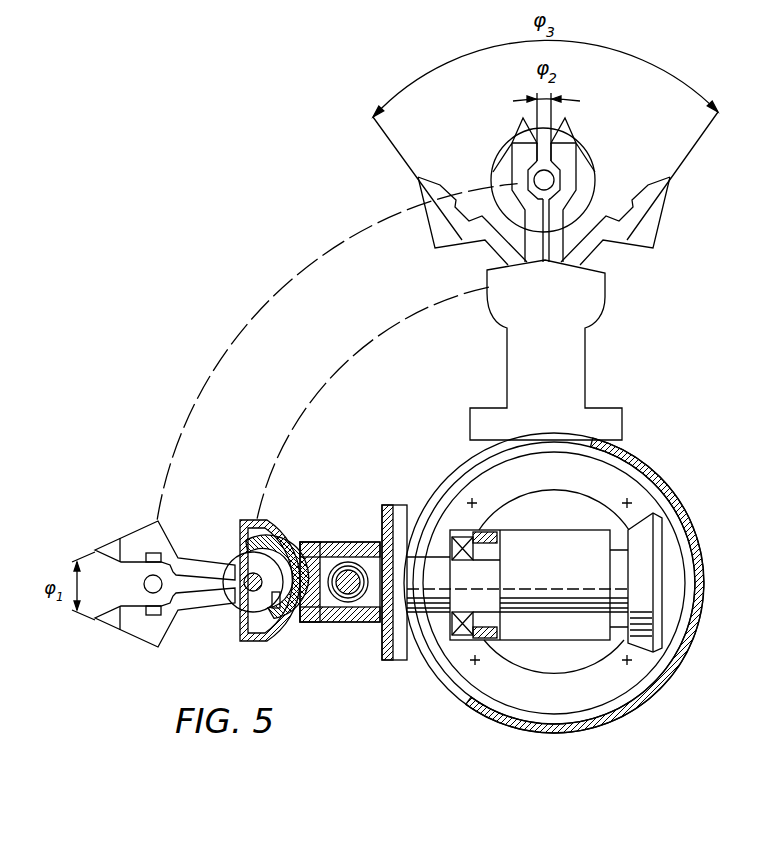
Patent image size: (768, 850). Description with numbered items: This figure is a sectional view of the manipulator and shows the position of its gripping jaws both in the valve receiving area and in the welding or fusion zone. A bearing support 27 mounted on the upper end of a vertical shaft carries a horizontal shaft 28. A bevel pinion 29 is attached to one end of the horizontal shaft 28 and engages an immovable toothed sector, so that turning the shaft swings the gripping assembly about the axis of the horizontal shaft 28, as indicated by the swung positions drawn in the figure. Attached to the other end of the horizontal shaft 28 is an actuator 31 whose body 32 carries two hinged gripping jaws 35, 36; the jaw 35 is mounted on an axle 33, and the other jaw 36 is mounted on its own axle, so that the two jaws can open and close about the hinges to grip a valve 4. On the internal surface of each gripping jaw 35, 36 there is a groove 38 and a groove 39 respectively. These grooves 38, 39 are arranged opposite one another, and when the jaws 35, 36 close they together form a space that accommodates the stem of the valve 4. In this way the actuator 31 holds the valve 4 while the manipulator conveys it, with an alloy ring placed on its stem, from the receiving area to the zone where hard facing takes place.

The valve 4 is at (144, 583).
The bearing support 27 is at (475, 636).
The horizontal shaft 28 is at (440, 594).
The bevel pinion 29 is at (645, 530).
The actuator 31 is at (388, 507).
The body 32 is at (313, 543).
The axle 33 is at (235, 566).
The gripping jaw 35 is at (160, 528).
The gripping jaw 36 is at (172, 612).
The groove 38 is at (141, 558).
The groove 39 is at (130, 625).